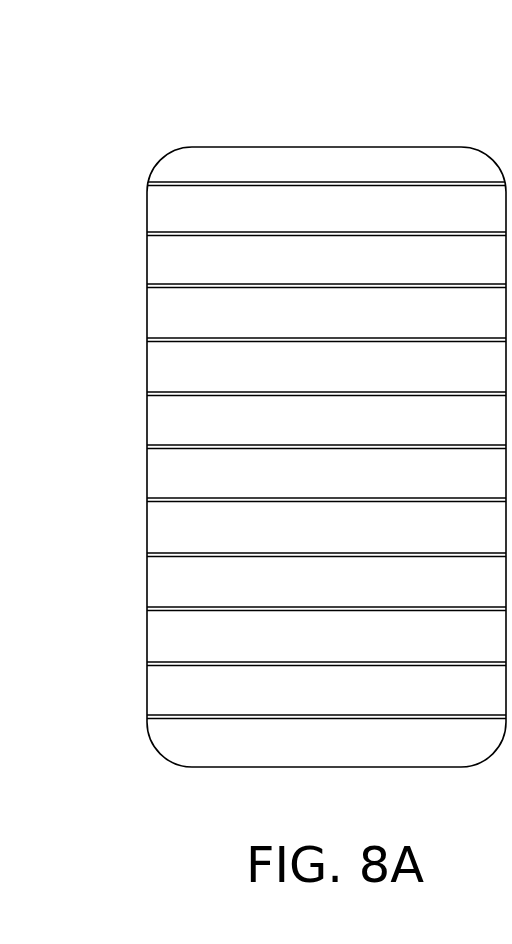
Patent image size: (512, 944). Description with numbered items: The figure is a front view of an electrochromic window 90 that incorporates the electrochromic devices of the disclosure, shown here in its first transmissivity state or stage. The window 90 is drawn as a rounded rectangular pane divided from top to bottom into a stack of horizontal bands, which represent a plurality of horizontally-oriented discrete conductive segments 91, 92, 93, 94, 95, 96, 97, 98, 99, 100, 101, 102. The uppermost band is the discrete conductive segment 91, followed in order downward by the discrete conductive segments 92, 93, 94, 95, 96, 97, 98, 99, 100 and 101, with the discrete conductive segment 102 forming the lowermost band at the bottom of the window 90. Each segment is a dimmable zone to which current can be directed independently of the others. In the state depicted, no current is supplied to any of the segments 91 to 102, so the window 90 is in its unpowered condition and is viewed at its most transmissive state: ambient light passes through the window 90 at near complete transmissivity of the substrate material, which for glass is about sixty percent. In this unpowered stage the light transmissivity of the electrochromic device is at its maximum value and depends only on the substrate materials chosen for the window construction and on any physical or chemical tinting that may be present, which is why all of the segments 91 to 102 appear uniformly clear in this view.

The electrochromic window 90 is at (383, 132).
The discrete conductive segment 91 is at (187, 168).
The discrete conductive segment 92 is at (161, 212).
The discrete conductive segment 93 is at (161, 266).
The discrete conductive segment 94 is at (161, 319).
The discrete conductive segment 95 is at (161, 371).
The discrete conductive segment 96 is at (161, 426).
The discrete conductive segment 97 is at (161, 483).
The discrete conductive segment 98 is at (161, 539).
The discrete conductive segment 99 is at (161, 589).
The discrete conductive segment 100 is at (161, 639).
The discrete conductive segment 101 is at (161, 696).
The discrete conductive segment 102 is at (175, 738).